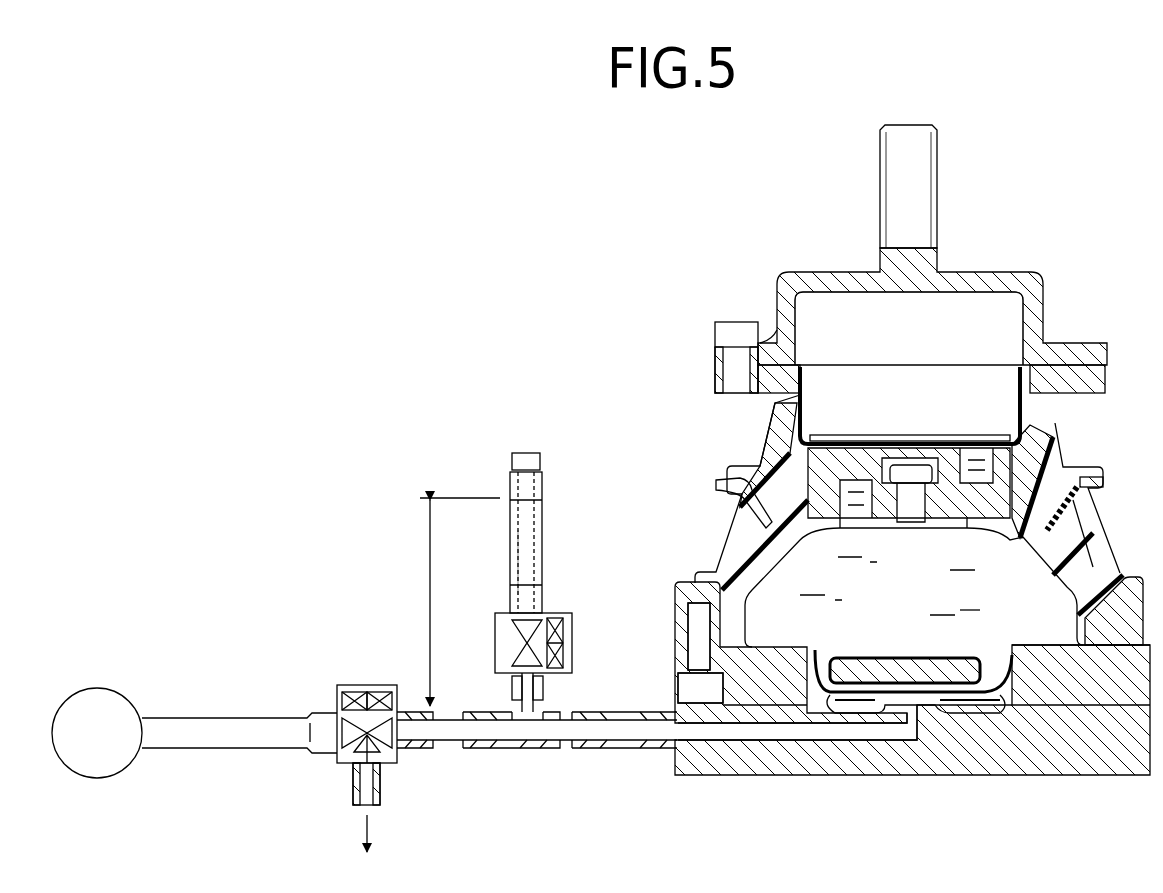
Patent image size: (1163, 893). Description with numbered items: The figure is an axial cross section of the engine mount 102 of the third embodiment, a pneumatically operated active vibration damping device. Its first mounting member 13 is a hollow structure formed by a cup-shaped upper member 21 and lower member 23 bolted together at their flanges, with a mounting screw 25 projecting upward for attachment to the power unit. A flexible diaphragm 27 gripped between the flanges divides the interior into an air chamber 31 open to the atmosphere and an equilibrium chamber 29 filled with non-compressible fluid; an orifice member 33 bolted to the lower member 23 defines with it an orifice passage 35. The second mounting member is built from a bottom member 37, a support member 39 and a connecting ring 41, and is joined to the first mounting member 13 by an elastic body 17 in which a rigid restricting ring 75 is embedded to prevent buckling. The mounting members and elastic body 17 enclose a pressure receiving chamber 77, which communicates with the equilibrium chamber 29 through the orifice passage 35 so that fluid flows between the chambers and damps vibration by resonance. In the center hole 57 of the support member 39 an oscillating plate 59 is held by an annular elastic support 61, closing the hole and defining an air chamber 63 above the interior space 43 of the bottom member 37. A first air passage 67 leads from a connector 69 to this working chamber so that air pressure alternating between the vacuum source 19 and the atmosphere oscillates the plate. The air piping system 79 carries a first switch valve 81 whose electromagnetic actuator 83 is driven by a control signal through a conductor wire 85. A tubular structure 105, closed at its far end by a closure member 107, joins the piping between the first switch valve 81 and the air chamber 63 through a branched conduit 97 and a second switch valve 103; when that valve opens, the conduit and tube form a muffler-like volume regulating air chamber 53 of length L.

The engine mount 102 is at (758, 208).
The first mounting member 13 is at (995, 255).
The mounting screw 25 is at (930, 195).
The upper member 21 is at (1043, 313).
The air chamber 31 is at (853, 310).
The flexible diaphragm 27 is at (800, 413).
The orifice member 33 is at (860, 440).
The equilibrium chamber 29 is at (900, 453).
The orifice passage 35 is at (967, 493).
The center hole 57 is at (818, 650).
The elastic support 61 is at (990, 662).
The lower member 23 is at (1030, 425).
The pressure receiving chamber 77 is at (1050, 600).
The elastic body 17 is at (1080, 522).
The restricting ring 75 is at (748, 510).
The connecting ring 41 is at (1122, 598).
The bottom member 37 is at (1037, 763).
The support member 39 is at (1102, 687).
The first air passage 67 is at (793, 733).
The connector 69 is at (713, 777).
The air chamber 63 is at (853, 707).
The oscillating plate 59 is at (925, 670).
The interior space 43 is at (950, 708).
The vacuum source 19 is at (108, 703).
The conductor wire 85 is at (322, 695).
The electromagnetic actuator 83 is at (380, 693).
The first switch valve 81 is at (345, 757).
The air piping system 79 is at (460, 760).
The branched conduit 97 is at (547, 697).
The second switch valve 103 is at (505, 648).
The tubular structure 105 is at (560, 531).
The volume regulating air chamber 53 is at (525, 562).
The closure member 107 is at (527, 460).